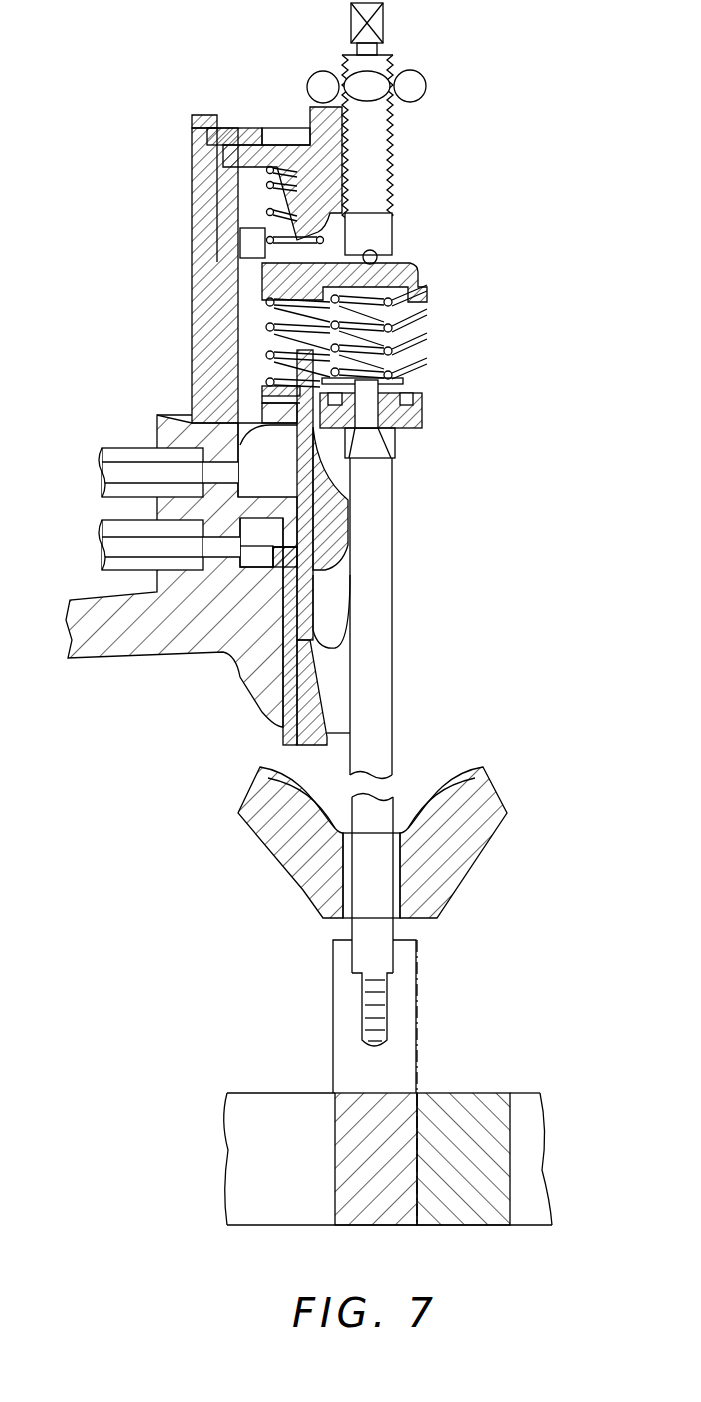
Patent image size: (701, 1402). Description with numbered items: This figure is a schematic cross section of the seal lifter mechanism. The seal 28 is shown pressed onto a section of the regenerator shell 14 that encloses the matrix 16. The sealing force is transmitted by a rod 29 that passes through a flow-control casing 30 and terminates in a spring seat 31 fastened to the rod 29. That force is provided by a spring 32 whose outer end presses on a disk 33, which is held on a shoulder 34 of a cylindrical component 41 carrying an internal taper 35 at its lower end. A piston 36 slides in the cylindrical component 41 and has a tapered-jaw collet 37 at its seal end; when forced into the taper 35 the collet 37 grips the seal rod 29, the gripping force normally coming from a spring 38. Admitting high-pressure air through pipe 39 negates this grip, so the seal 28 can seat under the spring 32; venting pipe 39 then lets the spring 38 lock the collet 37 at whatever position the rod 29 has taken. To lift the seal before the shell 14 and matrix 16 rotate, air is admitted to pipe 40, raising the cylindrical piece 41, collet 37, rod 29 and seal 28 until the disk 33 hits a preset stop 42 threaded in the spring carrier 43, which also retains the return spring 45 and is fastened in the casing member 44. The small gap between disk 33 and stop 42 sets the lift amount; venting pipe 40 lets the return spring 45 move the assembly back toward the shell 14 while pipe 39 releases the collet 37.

The regenerator shell 14 is at (362, 1127).
The matrix 16 is at (223, 1108).
The seal 28 is at (417, 1047).
The rod 29 is at (387, 898).
The flow-control casing 30 is at (505, 825).
The spring seat 31 is at (422, 405).
The spring 32 is at (397, 345).
The disk 33 is at (417, 283).
The shoulder 34 is at (240, 270).
The internal taper 35 is at (323, 705).
The piston 36 is at (265, 392).
The tapered-jaw collet 37 is at (350, 678).
The spring 38 is at (260, 322).
The pipe 39 is at (132, 470).
The pipe 40 is at (127, 545).
The cylindrical component 41 is at (285, 508).
The stop 42 is at (392, 235).
The spring carrier 43 is at (317, 163).
The casing member 44 is at (190, 137).
The return spring 45 is at (273, 210).